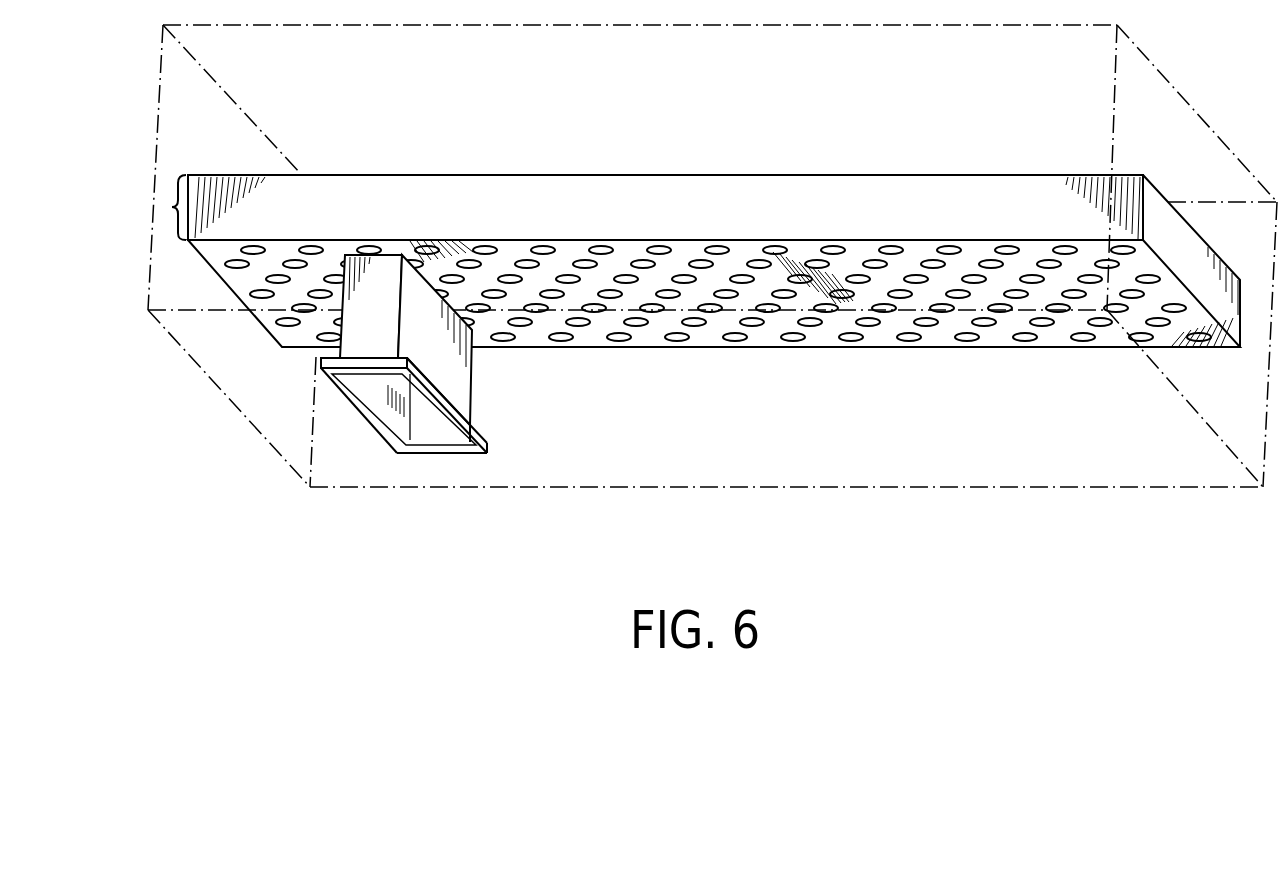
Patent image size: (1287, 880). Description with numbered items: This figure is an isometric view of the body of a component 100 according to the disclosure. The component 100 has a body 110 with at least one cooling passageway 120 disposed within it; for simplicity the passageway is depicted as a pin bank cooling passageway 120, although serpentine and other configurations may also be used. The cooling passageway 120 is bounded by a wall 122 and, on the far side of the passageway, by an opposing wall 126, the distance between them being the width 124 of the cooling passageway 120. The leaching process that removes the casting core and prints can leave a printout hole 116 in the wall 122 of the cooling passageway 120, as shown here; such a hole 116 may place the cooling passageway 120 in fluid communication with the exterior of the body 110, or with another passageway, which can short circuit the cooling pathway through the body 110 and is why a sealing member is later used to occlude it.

The component 100 is at (676, 304).
The body 110 is at (1037, 114).
The printout hole 116 is at (428, 438).
The cooling passageway 120 is at (935, 214).
The wall 122 is at (675, 325).
The width 124 is at (172, 207).
The opposing wall 126 is at (583, 160).